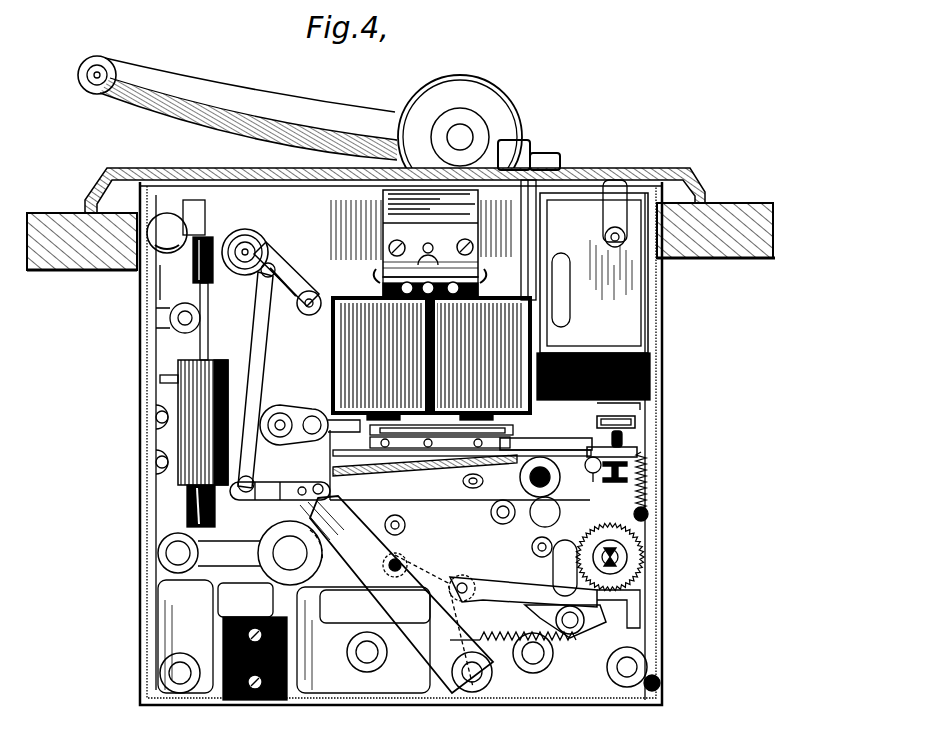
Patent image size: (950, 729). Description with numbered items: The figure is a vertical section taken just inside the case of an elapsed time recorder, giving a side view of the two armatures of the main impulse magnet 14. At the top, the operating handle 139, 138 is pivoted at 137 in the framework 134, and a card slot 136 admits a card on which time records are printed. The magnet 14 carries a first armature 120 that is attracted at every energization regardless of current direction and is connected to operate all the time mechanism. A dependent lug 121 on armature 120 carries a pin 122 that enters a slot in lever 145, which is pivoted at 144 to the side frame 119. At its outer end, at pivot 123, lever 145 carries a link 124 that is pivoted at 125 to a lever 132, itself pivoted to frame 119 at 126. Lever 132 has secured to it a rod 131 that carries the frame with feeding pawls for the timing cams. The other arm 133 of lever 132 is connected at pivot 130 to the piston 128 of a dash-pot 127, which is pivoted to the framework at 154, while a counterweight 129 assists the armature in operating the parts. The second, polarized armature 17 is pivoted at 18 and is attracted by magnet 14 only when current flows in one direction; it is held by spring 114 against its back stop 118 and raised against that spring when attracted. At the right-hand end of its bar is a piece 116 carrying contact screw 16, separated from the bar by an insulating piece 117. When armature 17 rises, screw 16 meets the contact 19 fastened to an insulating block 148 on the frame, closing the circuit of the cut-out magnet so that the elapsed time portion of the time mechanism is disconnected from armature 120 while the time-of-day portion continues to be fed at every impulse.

The magnet 14 is at (431, 348).
The contact screw 16 is at (623, 440).
The polarized armature 17 is at (413, 463).
The pivot 18 is at (282, 432).
The contact 19 is at (635, 420).
The spring 114 is at (645, 487).
The piece 116 is at (630, 451).
The insulating piece 117 is at (572, 452).
The back stop 118 is at (593, 472).
The side frame 119 is at (640, 333).
The armature 120 is at (510, 433).
The dependent lug 121 is at (463, 457).
The pin 122 is at (473, 485).
The pivot 123 is at (243, 498).
The link 124 is at (270, 343).
The pivot 125 is at (274, 270).
The pivot 126 is at (250, 252).
The dash-pot 127 is at (200, 403).
The piston 128 is at (202, 340).
The counterweight 129 is at (150, 260).
The pivot 130 is at (208, 240).
The rod 131 is at (365, 270).
The lever 132 is at (287, 303).
The arm 133 is at (193, 230).
The framework 134 is at (250, 178).
The card slot 136 is at (533, 148).
The pivot 137 is at (470, 133).
The operating handle 138 is at (113, 66).
The operating handle 139 is at (270, 103).
The pivot 144 is at (537, 482).
The lever 145 is at (433, 493).
The insulating block 148 is at (637, 405).
The pivot 154 is at (193, 513).